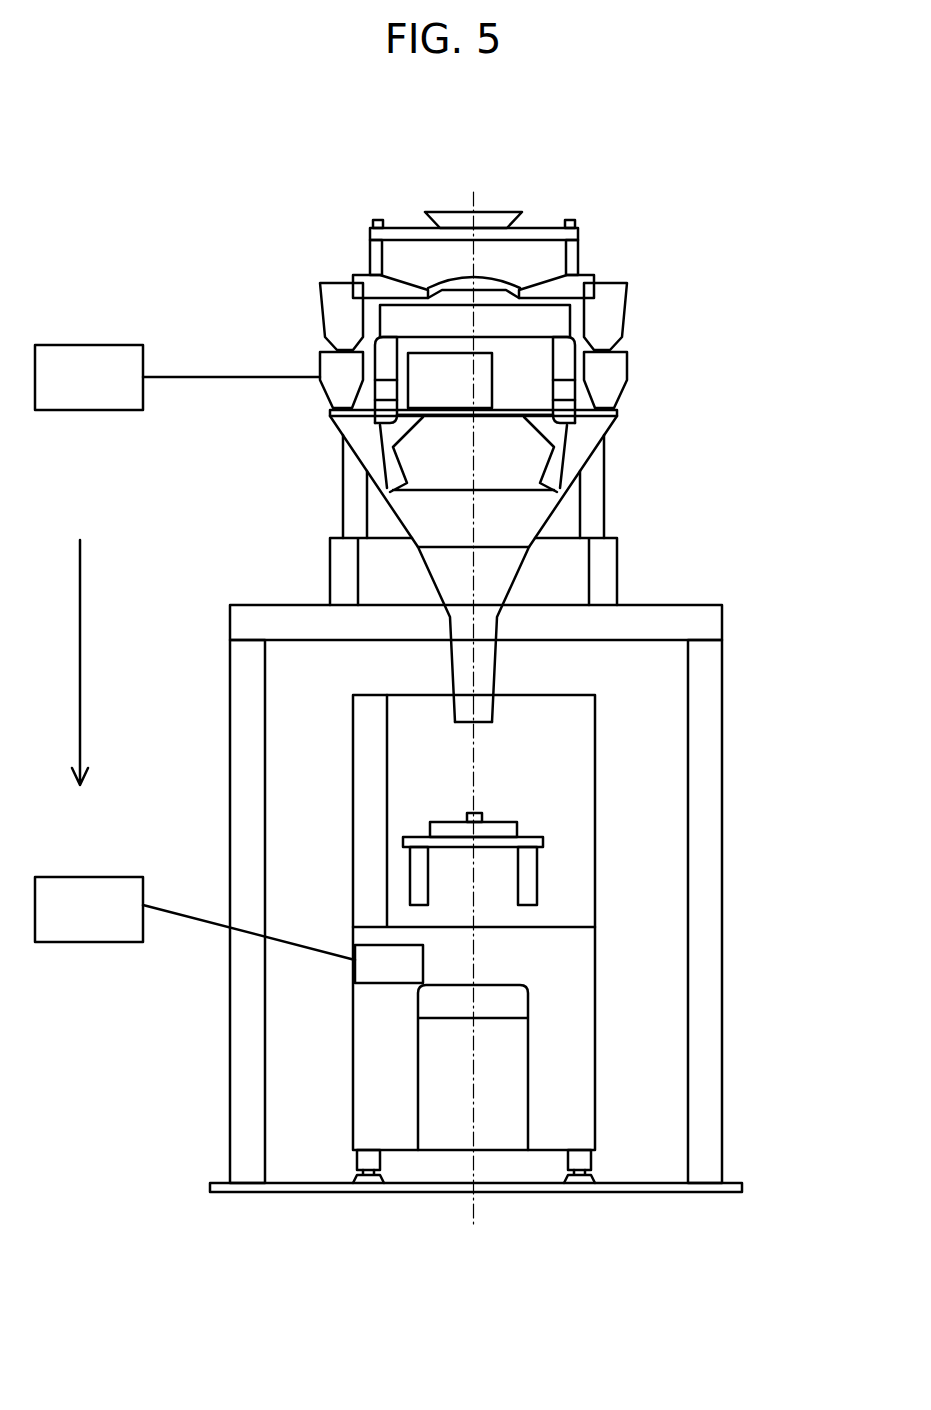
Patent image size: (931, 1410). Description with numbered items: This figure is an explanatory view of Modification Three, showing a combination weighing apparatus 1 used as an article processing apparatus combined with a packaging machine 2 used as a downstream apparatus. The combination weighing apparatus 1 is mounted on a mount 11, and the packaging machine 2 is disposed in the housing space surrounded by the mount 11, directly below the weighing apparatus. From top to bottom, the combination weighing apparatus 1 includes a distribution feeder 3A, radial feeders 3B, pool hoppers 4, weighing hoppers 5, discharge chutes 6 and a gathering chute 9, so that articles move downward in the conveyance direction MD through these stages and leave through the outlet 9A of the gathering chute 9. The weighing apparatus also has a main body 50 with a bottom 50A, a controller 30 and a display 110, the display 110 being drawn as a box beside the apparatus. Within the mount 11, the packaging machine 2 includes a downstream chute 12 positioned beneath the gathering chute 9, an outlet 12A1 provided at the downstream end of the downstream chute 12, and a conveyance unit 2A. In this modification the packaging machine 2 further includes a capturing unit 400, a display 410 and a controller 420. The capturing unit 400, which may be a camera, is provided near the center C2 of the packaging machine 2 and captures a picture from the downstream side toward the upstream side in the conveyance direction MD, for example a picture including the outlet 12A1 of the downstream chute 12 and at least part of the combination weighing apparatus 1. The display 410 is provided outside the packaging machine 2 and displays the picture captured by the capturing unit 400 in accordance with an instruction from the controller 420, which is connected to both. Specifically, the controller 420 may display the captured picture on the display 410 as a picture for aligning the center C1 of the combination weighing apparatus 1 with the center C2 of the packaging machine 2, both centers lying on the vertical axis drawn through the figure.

The combination weighing apparatus 1 is at (809, 378).
The packaging machine 2 is at (467, 916).
The conveyance unit 2A is at (432, 1010).
The distribution feeder 3A is at (489, 259).
The radial feeders 3B is at (357, 269).
The pool hoppers 4 is at (612, 292).
The weighing hoppers 5 is at (608, 370).
The discharge chutes 6 is at (580, 464).
The gathering chute 9 is at (472, 507).
The outlet 9A is at (409, 554).
The mount 11 is at (737, 645).
The downstream chute 12 is at (614, 676).
The outlet 12A1 is at (482, 725).
The controller 30 is at (448, 365).
The main body 50 is at (484, 285).
The bottom 50A is at (510, 409).
The display 110 is at (109, 328).
The capturing unit 400 is at (438, 816).
The display 410 is at (90, 942).
The controller 420 is at (345, 973).
The center of the combination weighing apparatus C1 is at (474, 192).
The center of the packaging machine C2 is at (474, 1225).
The conveyance direction MD is at (61, 662).